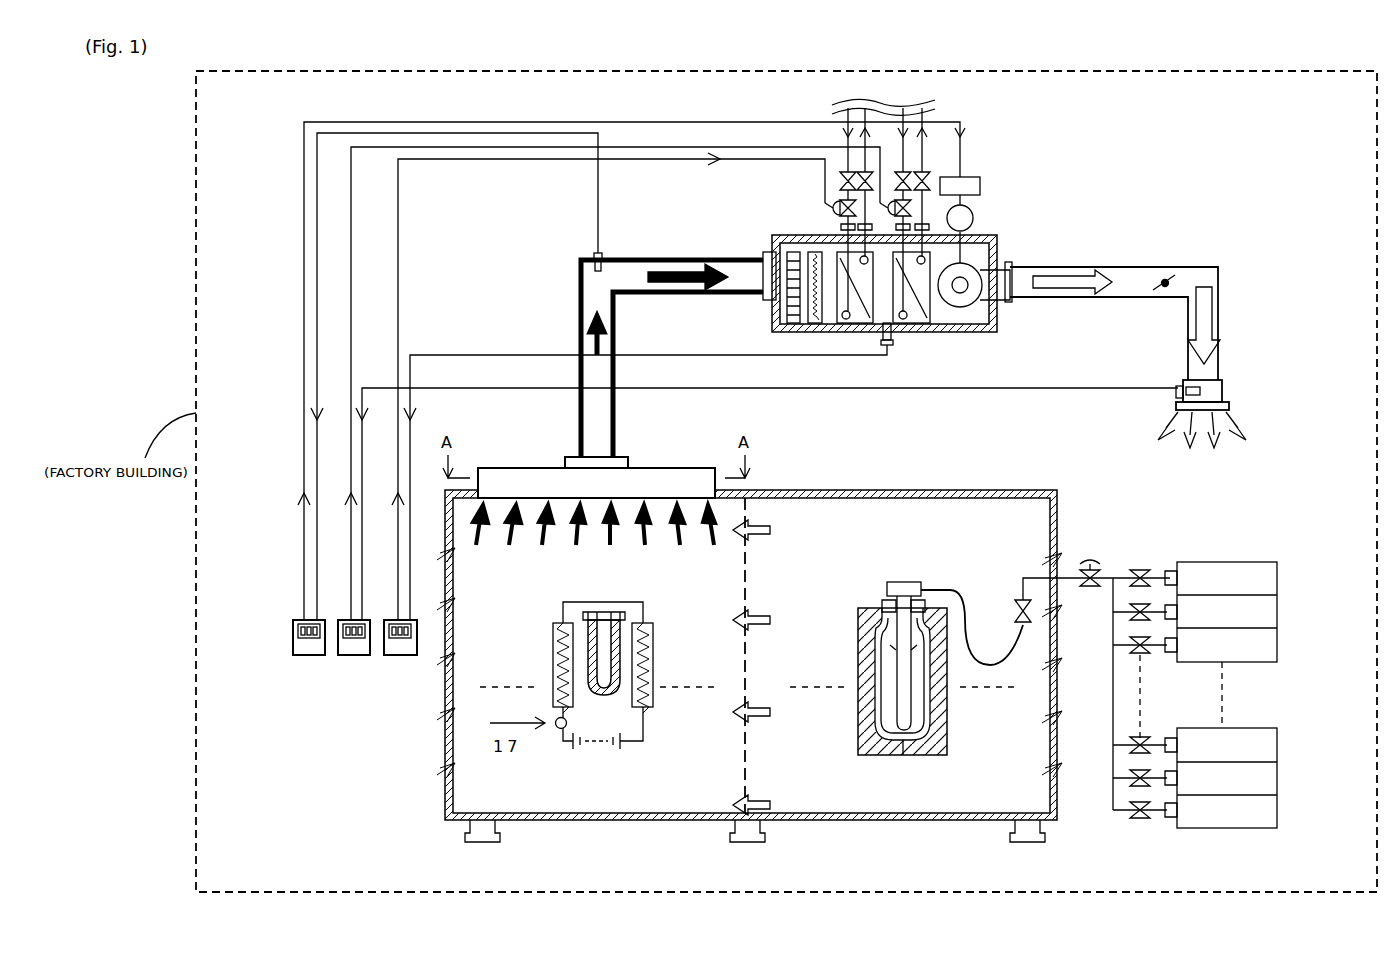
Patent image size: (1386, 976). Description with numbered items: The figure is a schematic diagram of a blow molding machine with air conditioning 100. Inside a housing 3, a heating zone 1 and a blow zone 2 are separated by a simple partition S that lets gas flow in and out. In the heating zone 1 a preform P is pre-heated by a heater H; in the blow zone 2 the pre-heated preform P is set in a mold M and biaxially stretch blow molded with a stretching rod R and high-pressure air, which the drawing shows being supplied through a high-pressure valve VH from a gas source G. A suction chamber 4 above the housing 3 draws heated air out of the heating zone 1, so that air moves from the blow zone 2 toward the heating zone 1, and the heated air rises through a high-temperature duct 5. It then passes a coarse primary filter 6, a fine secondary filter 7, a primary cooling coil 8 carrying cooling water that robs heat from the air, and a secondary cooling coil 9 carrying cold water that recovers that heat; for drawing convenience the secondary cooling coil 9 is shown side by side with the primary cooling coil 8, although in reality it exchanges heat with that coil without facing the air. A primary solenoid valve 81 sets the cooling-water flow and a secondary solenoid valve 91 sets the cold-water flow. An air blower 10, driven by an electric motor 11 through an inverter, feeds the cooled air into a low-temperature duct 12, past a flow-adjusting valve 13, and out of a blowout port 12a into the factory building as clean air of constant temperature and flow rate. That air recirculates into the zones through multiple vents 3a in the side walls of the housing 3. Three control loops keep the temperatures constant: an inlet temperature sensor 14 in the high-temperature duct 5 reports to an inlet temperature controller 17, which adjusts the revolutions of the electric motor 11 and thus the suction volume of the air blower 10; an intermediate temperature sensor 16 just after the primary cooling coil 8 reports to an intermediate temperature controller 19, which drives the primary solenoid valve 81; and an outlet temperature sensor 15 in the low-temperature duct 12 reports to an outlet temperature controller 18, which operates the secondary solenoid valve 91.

The heating zone 1 is at (610, 778).
The blow zone 2 is at (918, 780).
The housing 3 is at (1068, 812).
The vents 3a is at (440, 775).
The suction chamber 4 is at (555, 468).
The high-temperature duct 5 is at (580, 312).
The primary filter 6 is at (788, 333).
The secondary filter 7 is at (812, 333).
The primary cooling coil 8 is at (850, 333).
The secondary cooling coil 9 is at (930, 320).
The air blower 10 is at (997, 243).
The electric motor 11 is at (990, 210).
The low-temperature duct 12 is at (1150, 267).
The blowout port 12a is at (1213, 447).
The flow-adjusting valve 13 is at (1160, 290).
The inlet temperature sensor 14 is at (596, 252).
The outlet temperature sensor 15 is at (1176, 393).
The intermediate temperature sensor 16 is at (892, 340).
The inlet temperature controller 17 is at (309, 657).
The outlet temperature controller 18 is at (356, 657).
The intermediate temperature controller 19 is at (400, 657).
The primary solenoid valve 81 is at (835, 207).
The secondary solenoid valve 91 is at (845, 195).
The blow molding machine with air conditioning 100 is at (1128, 175).
The preform P is at (610, 613).
The heater H is at (655, 655).
The simple partition S is at (745, 728).
The stretching rod R is at (886, 598).
The mold M is at (858, 660).
The high-pressure valve VH is at (1020, 630).
The gas source G is at (1217, 838).